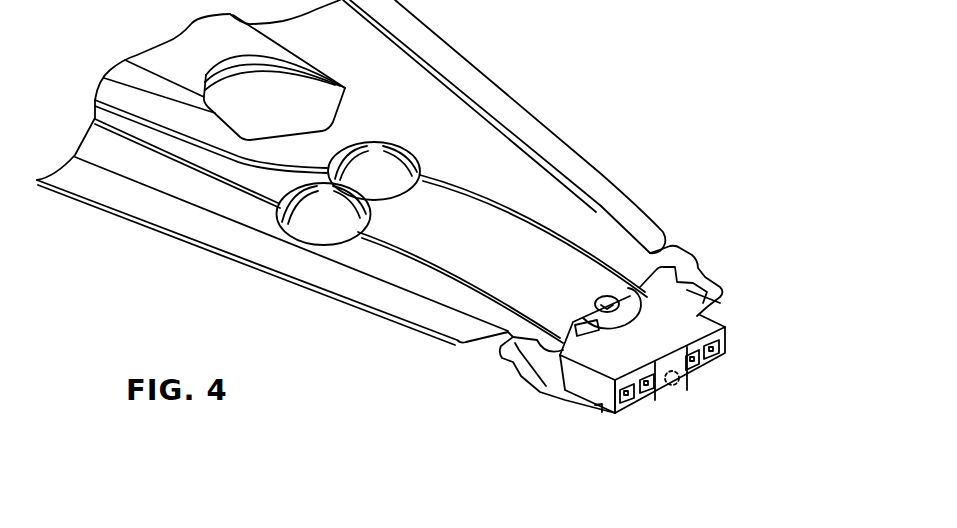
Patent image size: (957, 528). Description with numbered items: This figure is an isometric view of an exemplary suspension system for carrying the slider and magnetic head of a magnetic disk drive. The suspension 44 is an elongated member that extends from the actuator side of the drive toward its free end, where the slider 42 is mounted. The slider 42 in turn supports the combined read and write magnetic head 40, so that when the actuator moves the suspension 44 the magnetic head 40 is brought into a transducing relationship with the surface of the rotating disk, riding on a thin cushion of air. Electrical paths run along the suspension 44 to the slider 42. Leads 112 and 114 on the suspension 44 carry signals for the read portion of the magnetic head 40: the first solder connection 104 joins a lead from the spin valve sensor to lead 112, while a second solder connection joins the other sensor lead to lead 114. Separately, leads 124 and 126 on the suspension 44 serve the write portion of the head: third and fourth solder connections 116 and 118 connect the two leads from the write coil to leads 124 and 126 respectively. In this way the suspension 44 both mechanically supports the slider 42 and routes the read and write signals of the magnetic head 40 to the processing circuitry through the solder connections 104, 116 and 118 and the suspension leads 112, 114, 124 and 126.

The magnetic head 40 is at (687, 392).
The slider 42 is at (567, 401).
The suspension 44 is at (522, 104).
The first solder connection 104 is at (612, 402).
The lead 112 is at (393, 250).
The lead 114 is at (580, 242).
The third solder connection 116 is at (643, 392).
The fourth solder connection 118 is at (697, 362).
The lead 124 is at (444, 276).
The lead 126 is at (498, 205).